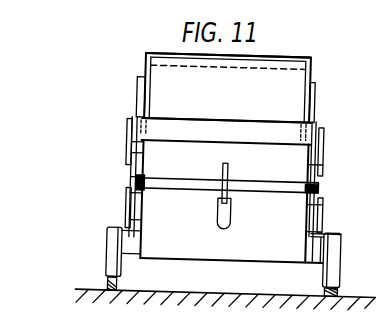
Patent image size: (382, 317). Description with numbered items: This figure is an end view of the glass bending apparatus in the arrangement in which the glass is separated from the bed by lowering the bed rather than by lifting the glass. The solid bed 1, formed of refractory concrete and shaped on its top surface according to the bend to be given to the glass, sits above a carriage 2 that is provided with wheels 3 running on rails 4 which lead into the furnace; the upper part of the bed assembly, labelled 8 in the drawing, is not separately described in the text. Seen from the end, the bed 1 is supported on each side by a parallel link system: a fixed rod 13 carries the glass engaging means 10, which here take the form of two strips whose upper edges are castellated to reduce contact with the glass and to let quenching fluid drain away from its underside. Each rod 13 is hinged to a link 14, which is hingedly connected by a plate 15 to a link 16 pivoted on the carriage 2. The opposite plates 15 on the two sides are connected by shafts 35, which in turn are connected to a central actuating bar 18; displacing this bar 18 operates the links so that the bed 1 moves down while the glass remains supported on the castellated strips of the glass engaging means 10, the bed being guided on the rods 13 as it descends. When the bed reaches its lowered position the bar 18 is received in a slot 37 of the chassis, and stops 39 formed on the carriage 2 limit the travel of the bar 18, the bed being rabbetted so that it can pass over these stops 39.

The bed 1 is at (292, 97).
The carriage 2 is at (236, 262).
The wheels 3 is at (107, 262).
The rails 4 is at (118, 287).
The top plate 8 is at (284, 56).
The glass engaging means 10 is at (146, 63).
The rods 13 is at (138, 105).
The link 14 is at (323, 143).
The plate 15 is at (319, 170).
The link 16 is at (326, 210).
The actuating bar 18 is at (231, 173).
The shafts 35 is at (167, 180).
The slot 37 is at (235, 213).
The stops 39 is at (143, 178).